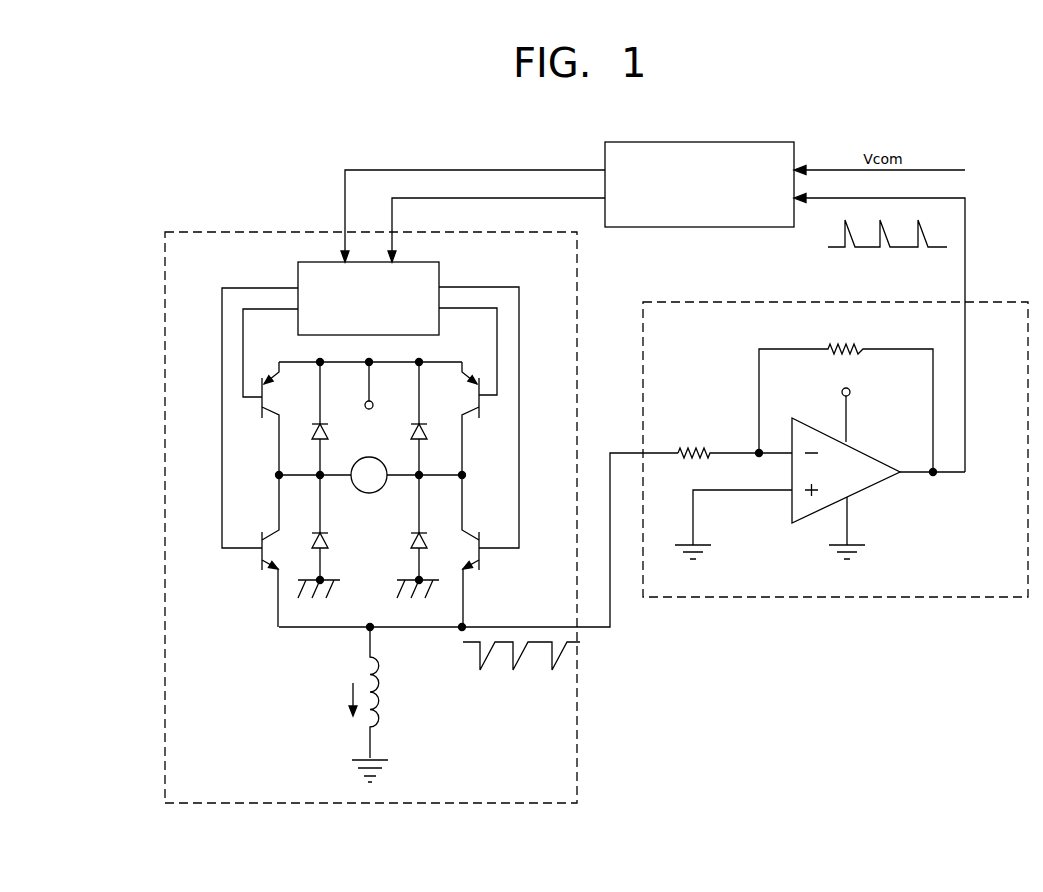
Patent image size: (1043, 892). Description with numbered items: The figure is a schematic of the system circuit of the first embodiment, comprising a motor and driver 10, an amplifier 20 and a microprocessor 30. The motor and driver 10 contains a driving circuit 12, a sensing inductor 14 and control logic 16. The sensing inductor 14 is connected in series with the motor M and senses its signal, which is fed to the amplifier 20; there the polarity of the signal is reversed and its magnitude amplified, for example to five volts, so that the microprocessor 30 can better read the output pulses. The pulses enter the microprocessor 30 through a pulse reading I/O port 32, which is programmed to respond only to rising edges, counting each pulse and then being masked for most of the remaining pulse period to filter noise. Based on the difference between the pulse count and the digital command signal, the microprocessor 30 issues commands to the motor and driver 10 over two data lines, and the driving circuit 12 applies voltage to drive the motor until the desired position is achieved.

The motor and driver 10 is at (164, 513).
The driving circuit 12 is at (279, 604).
The sensing inductor 14 is at (385, 724).
The control logic 16 is at (439, 269).
The amplifier 20 is at (835, 597).
The microprocessor 30 is at (702, 142).
The pulse reading input/output (I/O) port 32 is at (800, 208).